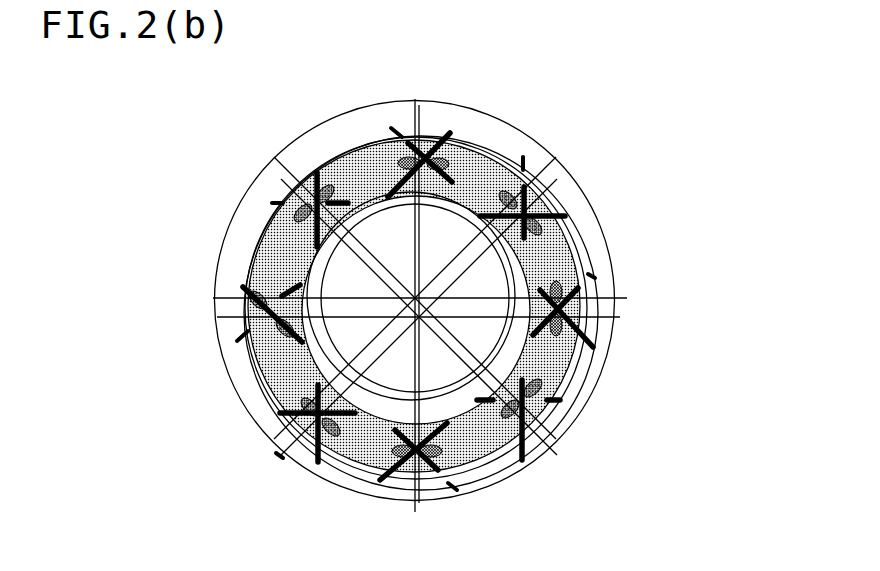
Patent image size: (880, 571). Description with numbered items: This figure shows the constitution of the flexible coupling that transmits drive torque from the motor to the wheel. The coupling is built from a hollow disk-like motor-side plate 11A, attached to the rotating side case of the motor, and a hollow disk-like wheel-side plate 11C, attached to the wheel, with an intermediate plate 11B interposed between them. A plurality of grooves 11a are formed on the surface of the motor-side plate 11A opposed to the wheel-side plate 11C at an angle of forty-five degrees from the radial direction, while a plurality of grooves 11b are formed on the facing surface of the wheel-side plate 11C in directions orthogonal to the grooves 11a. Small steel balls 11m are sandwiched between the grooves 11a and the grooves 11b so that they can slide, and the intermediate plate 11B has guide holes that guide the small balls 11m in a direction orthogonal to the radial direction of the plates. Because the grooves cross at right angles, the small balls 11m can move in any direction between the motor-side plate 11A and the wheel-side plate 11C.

The motor-side plate 11A is at (575, 370).
The intermediate plate 11B is at (550, 258).
The wheel-side plate 11C is at (583, 208).
The grooves 11a is at (432, 115).
The small steel balls 11m is at (447, 148).
The grooves 11b is at (445, 170).